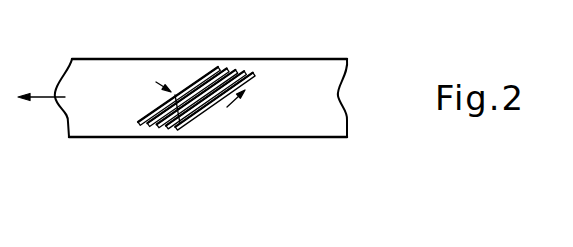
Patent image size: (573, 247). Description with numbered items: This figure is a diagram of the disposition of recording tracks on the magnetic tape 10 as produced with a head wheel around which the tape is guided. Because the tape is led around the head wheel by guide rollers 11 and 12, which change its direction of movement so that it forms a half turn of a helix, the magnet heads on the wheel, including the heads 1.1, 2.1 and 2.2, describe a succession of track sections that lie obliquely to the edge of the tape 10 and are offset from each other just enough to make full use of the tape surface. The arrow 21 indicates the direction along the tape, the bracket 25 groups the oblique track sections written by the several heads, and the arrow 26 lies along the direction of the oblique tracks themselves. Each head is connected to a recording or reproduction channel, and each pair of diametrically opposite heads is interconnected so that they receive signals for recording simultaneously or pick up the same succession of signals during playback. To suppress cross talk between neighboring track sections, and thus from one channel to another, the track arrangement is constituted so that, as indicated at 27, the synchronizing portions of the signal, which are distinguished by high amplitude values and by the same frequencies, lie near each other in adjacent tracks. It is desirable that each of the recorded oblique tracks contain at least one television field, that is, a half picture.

The magnetic tape 10 is at (312, 63).
The transport direction arrow 21 is at (45, 93).
The group of conductor strips 25 is at (175, 125).
The guide roller 11 is at (139, 127).
The guide roller 12 is at (148, 128).
The magnet head 2.1 is at (158, 128).
The magnet head 2.2 is at (168, 129).
The magnet head 1.1 is at (178, 130).
The longitudinal direction arrow 26 is at (240, 96).
The location of synchronizing portions 27 is at (149, 83).